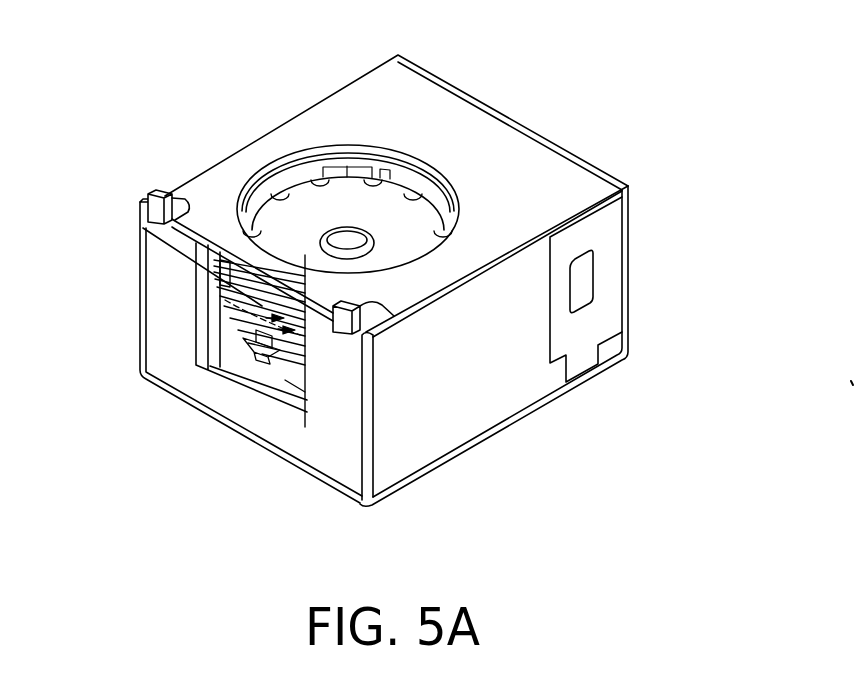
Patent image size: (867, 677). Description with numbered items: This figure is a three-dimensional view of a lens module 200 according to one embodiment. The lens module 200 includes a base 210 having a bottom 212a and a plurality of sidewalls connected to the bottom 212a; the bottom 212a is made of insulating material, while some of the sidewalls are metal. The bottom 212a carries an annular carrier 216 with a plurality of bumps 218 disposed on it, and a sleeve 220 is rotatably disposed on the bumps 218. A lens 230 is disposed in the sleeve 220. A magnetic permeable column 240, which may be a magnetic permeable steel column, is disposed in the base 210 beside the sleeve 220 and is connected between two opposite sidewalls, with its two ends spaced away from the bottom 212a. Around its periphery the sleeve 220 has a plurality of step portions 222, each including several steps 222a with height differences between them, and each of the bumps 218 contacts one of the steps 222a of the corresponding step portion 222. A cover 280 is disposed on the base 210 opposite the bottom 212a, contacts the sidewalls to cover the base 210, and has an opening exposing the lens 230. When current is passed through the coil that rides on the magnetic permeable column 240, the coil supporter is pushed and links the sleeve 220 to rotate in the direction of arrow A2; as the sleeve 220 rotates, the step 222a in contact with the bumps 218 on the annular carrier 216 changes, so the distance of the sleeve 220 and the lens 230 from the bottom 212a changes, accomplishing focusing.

The lens module 200 is at (724, 579).
The base 210 is at (381, 346).
The bottom 212a is at (210, 362).
The annular carrier 216 is at (287, 390).
The bumps 218 is at (260, 350).
The sleeve 220 is at (213, 292).
The step portions 222 is at (215, 330).
The steps 222a is at (250, 348).
The lens 230 is at (295, 217).
The magnetic permeable column 240 is at (583, 278).
The cover 280 is at (512, 150).
The arrow A2 is at (266, 318).